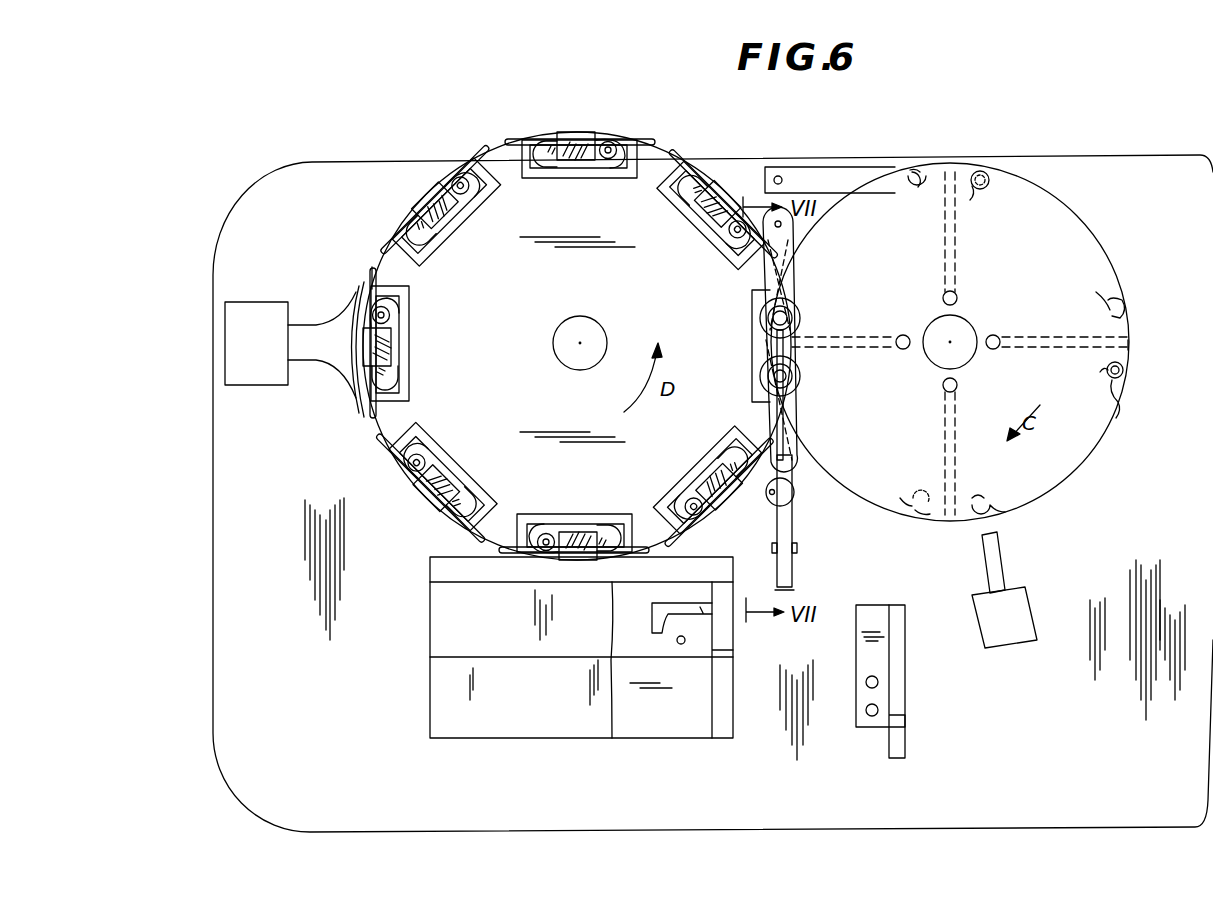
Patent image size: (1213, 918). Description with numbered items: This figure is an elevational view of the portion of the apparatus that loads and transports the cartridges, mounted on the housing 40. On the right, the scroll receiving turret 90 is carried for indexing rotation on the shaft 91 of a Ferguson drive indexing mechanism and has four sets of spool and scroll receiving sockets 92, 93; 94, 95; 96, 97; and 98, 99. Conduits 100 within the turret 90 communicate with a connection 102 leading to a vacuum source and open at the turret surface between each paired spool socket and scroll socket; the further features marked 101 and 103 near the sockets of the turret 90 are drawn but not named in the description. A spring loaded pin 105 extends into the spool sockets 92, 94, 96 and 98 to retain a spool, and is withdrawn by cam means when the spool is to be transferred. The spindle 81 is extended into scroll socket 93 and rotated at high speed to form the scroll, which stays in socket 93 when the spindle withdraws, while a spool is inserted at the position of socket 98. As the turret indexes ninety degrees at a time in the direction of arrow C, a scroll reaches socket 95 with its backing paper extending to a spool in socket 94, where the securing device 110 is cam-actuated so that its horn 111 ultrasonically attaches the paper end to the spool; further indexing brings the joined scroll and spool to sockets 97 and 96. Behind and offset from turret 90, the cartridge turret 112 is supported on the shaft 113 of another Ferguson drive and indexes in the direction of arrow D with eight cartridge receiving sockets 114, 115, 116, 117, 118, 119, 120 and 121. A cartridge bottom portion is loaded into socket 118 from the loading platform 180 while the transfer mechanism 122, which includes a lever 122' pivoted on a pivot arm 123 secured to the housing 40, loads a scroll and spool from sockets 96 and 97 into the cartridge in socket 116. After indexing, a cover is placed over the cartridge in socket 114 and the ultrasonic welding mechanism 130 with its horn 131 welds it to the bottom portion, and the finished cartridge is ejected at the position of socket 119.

The housing 40 is at (213, 455).
The scroll spindle 81 is at (1124, 372).
The scroll receiving turret 90 is at (1072, 226).
The shaft 91 is at (968, 328).
The spool receiving socket 92 is at (1098, 296).
The scroll receiving socket 93 is at (1120, 404).
The spool receiving socket 94 is at (984, 498).
The scroll receiving socket 95 is at (904, 498).
The spool receiving socket 96 is at (796, 380).
The scroll receiving socket 97 is at (793, 312).
The spool receiving socket 98 is at (908, 186).
The scroll receiving socket 99 is at (980, 172).
The conduits 100 is at (956, 246).
The recess 101 is at (975, 196).
The connection 102 is at (944, 297).
The recess 103 is at (1130, 348).
The spring loaded pin 105 is at (918, 172).
The ultrasonic securing device 110 is at (1022, 610).
The horn 111 is at (1000, 558).
The cartridge turret 112 is at (375, 282).
The shaft 113 is at (596, 330).
The cartridge receiving socket 114 is at (575, 160).
The cartridge receiving socket 115 is at (725, 240).
The cartridge receiving socket 116 is at (752, 345).
The cartridge receiving socket 117 is at (700, 462).
The cartridge receiving socket 118 is at (582, 530).
The cartridge receiving socket 119 is at (450, 487).
The cartridge receiving socket 120 is at (385, 344).
The cartridge receiving socket 121 is at (438, 226).
The transfer mechanism 122 is at (808, 397).
The lever 122' is at (817, 559).
The pivot arm 123 is at (772, 498).
The ultrasonic welding mechanism 130 is at (260, 312).
The horn 131 is at (325, 376).
The loading platform 180 is at (494, 728).